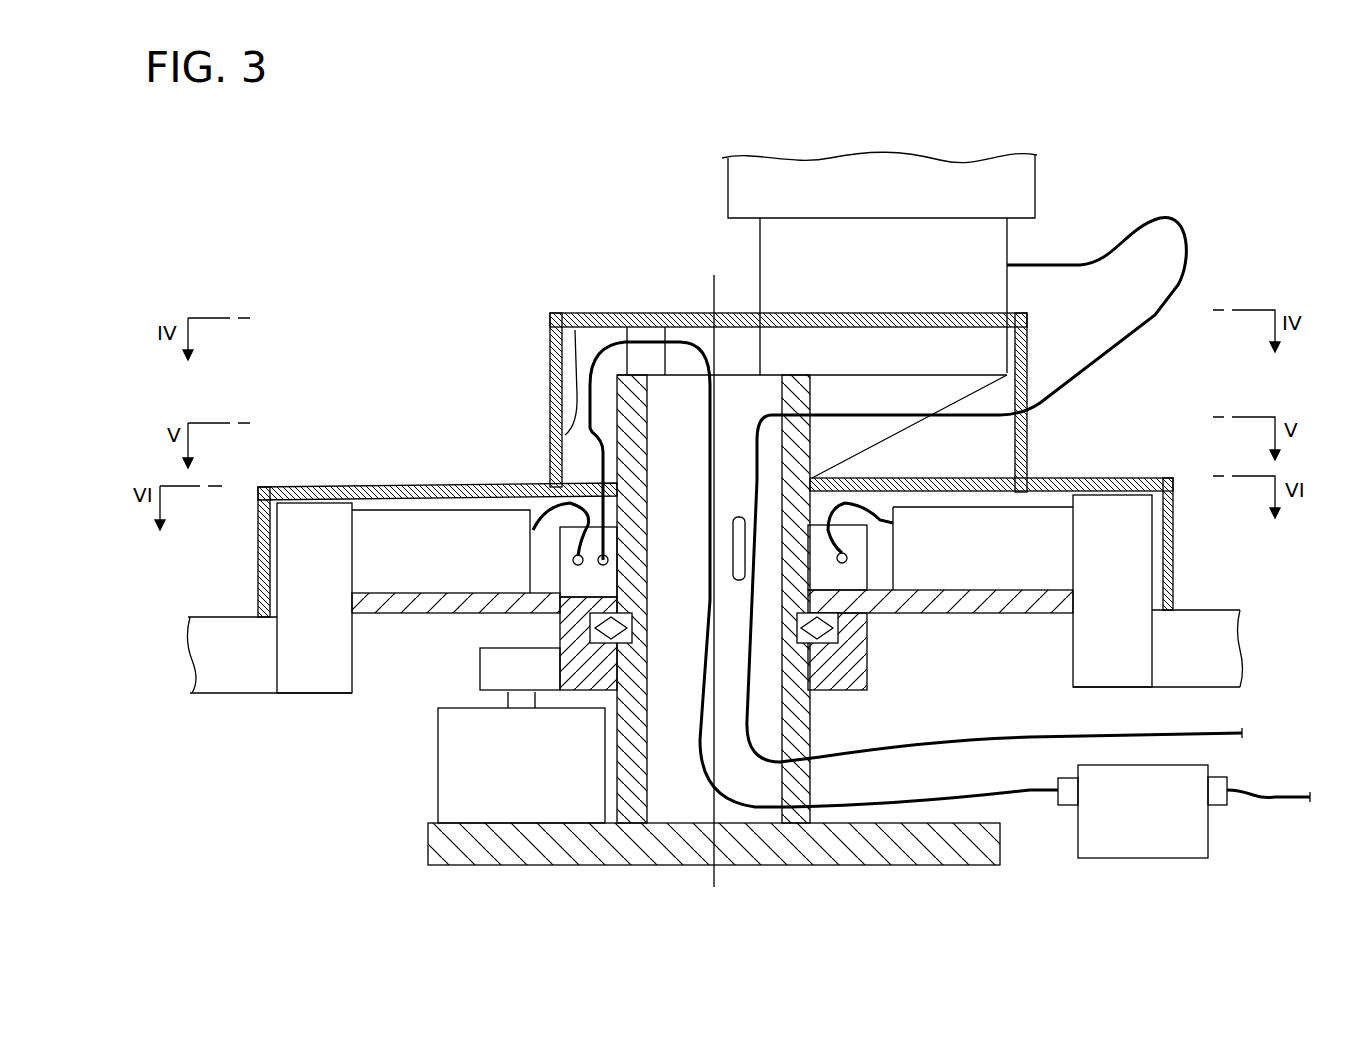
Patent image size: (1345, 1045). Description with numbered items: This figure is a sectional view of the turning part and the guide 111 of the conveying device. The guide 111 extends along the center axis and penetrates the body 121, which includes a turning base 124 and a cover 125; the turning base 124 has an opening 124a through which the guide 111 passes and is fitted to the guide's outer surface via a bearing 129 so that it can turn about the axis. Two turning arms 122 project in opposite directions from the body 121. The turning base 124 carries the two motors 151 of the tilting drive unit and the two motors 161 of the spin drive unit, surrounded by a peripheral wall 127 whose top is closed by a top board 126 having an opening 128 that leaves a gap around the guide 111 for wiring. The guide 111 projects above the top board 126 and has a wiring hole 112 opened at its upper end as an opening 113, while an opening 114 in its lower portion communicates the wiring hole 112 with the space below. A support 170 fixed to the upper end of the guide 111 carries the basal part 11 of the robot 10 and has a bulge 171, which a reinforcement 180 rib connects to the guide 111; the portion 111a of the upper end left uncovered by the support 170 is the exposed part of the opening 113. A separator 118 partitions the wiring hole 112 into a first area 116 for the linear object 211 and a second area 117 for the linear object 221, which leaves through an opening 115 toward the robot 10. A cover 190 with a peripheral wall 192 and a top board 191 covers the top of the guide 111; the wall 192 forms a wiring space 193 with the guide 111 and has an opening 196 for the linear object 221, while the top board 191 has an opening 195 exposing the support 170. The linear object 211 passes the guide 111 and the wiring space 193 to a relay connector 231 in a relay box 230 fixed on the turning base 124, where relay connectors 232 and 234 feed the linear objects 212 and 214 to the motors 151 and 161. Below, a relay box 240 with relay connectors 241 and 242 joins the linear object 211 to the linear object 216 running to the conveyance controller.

The robot 10 is at (1058, 175).
The basal part 11 is at (958, 248).
The guide 111 is at (610, 750).
The portion 111a is at (627, 327).
The wiring hole 112 is at (660, 840).
The opening 113 is at (665, 327).
The opening 114 is at (807, 735).
The opening 115 is at (810, 398).
The first area 116 is at (680, 660).
The second area 117 is at (753, 807).
The separator 118 is at (738, 517).
The body 121 is at (304, 470).
The turning arms 122 is at (237, 672).
The turning base 124 is at (392, 613).
The opening 124a is at (645, 597).
The cover 125 is at (416, 470).
The top board 126 is at (343, 520).
The peripheral wall 127 is at (258, 540).
The opening 128 is at (593, 470).
The bearing 129 is at (863, 620).
The motors 151 is at (377, 540).
The motors 161 is at (1045, 520).
The support 170 is at (787, 330).
The bulge 171 is at (1025, 330).
The reinforcement 180 is at (878, 440).
The cover 190 is at (548, 322).
The top board 191 is at (675, 313).
The peripheral wall 192 is at (556, 368).
The wiring space 193 is at (567, 313).
The opening 195 is at (714, 275).
The opening 196 is at (1030, 395).
The linear object 211 is at (898, 815).
The linear objects 212 is at (553, 582).
The linear objects 214 is at (890, 530).
The linear object 216 is at (1280, 800).
The linear object 221 is at (1165, 305).
The relay box 230 is at (560, 600).
The relay connector 231 is at (585, 582).
The relay connectors 232 is at (530, 557).
The relay connectors 234 is at (850, 545).
The relay box 240 is at (1150, 845).
The relay connector 241 is at (1068, 798).
The relay connector 242 is at (1220, 778).